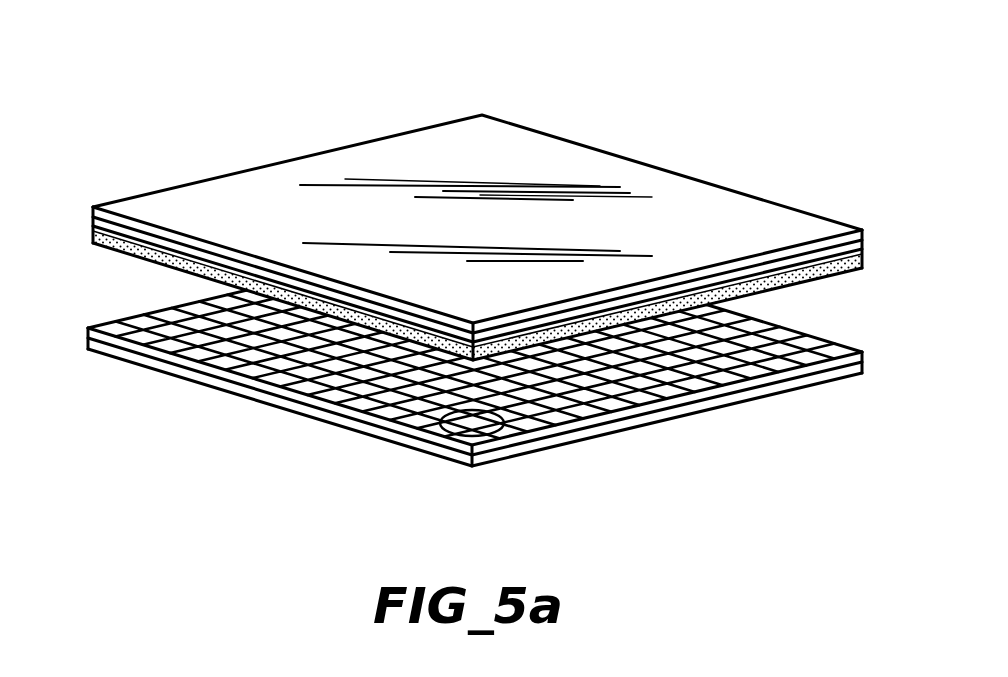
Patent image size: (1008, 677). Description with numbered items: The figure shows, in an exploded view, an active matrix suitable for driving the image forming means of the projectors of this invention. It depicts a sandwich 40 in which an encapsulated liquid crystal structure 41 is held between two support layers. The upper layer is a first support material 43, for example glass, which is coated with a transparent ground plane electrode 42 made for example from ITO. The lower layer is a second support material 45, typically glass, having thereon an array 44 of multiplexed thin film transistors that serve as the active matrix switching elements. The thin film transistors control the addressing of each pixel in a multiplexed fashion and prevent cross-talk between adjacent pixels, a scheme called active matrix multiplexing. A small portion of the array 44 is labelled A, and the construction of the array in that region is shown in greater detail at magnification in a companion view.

The sandwich 40 is at (478, 292).
The encapsulated liquid crystal structure 41 is at (618, 330).
The transparent ground plane electrode 42 is at (645, 298).
The first support material 43 is at (387, 167).
The array of multiplexed TFT's 44 is at (222, 322).
The second support material 45 is at (312, 414).
The portion of FIG. 5a A is at (443, 432).